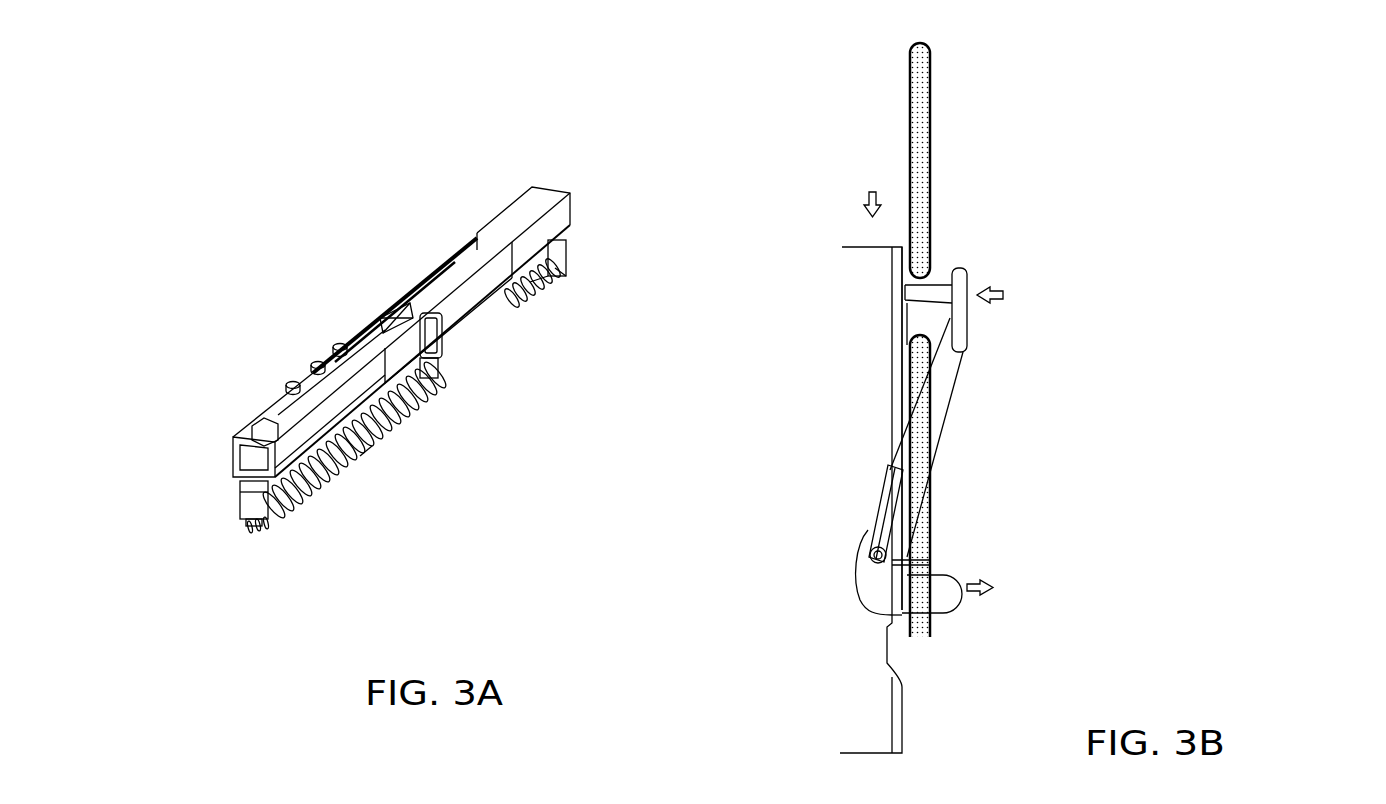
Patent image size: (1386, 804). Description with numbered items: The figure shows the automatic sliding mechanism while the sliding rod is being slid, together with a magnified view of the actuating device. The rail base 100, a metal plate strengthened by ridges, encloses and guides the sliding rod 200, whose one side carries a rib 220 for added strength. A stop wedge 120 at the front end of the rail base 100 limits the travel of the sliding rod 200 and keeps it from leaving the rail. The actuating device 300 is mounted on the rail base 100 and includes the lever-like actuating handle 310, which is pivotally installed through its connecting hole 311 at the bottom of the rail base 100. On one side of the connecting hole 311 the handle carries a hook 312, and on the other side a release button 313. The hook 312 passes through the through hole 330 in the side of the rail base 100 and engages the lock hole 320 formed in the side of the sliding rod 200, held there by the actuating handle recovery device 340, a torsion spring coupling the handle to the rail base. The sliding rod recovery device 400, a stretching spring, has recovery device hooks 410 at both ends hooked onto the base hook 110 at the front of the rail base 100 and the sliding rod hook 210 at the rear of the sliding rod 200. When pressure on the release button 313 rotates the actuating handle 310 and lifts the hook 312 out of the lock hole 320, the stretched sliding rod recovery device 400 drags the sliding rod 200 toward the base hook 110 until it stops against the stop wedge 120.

In FIG. 3A, the rail base 100 is at (315, 356).
In FIG. 3B, the rail base 100 is at (921, 122).
In FIG. 3A, the base hook 110 is at (250, 498).
In FIG. 3A, the stop wedge 120 is at (250, 425).
In FIG. 3A, the sliding rod 200 is at (355, 331).
In FIG. 3B, the sliding rod 200 is at (866, 263).
In FIG. 3A, the sliding rod hook 210 is at (440, 372).
In FIG. 3B, the rib 220 is at (893, 263).
In FIG. 3A, the actuating device 300 is at (403, 490).
In FIG. 3B, the actuating device 300 is at (1050, 377).
In FIG. 3A, the actuating handle 310 is at (430, 395).
In FIG. 3B, the actuating handle 310 is at (962, 436).
In FIG. 3B, the connecting hole 311 is at (869, 556).
In FIG. 3A, the hook 312 is at (420, 330).
In FIG. 3B, the hook 312 is at (935, 290).
In FIG. 3A, the release button 313 is at (365, 462).
In FIG. 3B, the release button 313 is at (945, 599).
In FIG. 3B, the lock hole 320 is at (892, 616).
In FIG. 3A, the through hole 330 is at (368, 340).
In FIG. 3B, the through hole 330 is at (915, 322).
In FIG. 3A, the actuating handle recovery device 340 is at (400, 430).
In FIG. 3B, the actuating handle recovery device 340 is at (872, 527).
In FIG. 3A, the sliding rod recovery device 400 is at (428, 408).
In FIG. 3A, the recovery device hook 410 is at (257, 533).